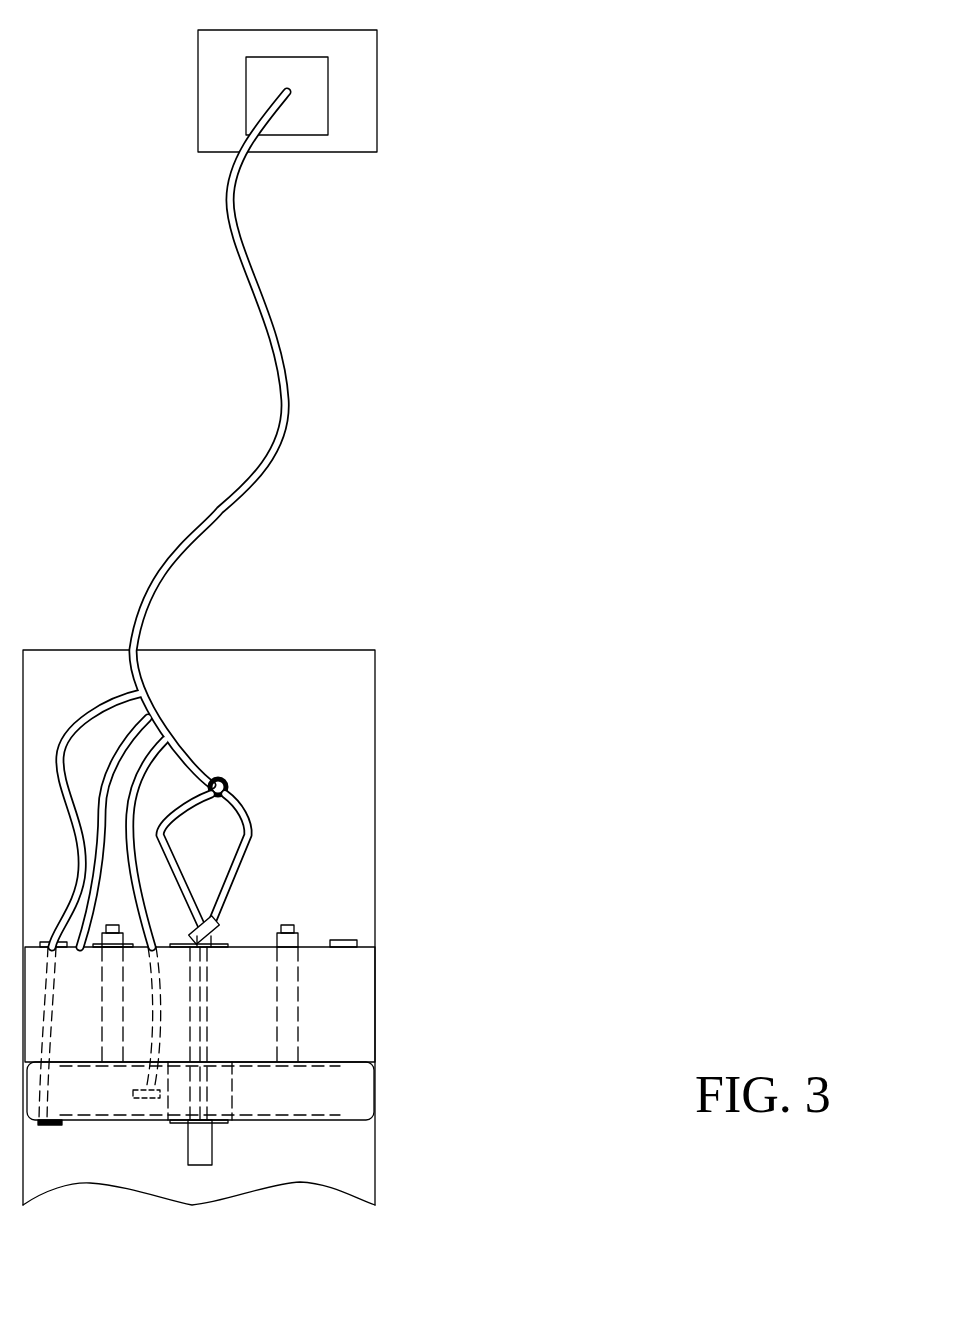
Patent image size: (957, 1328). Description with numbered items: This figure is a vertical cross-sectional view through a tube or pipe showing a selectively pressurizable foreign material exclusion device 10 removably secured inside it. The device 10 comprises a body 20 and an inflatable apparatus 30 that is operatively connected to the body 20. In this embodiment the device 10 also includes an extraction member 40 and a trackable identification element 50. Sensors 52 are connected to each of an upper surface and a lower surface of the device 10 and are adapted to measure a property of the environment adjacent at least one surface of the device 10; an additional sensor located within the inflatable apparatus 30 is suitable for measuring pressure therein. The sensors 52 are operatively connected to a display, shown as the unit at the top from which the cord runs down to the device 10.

The selectively pressurizable foreign material exclusion device 10 is at (537, 965).
The body 20 is at (332, 1012).
The inflatable apparatus 30 is at (342, 1095).
The extraction member 40 is at (262, 832).
The identification element 50 is at (348, 937).
The sensors 52 is at (183, 555).